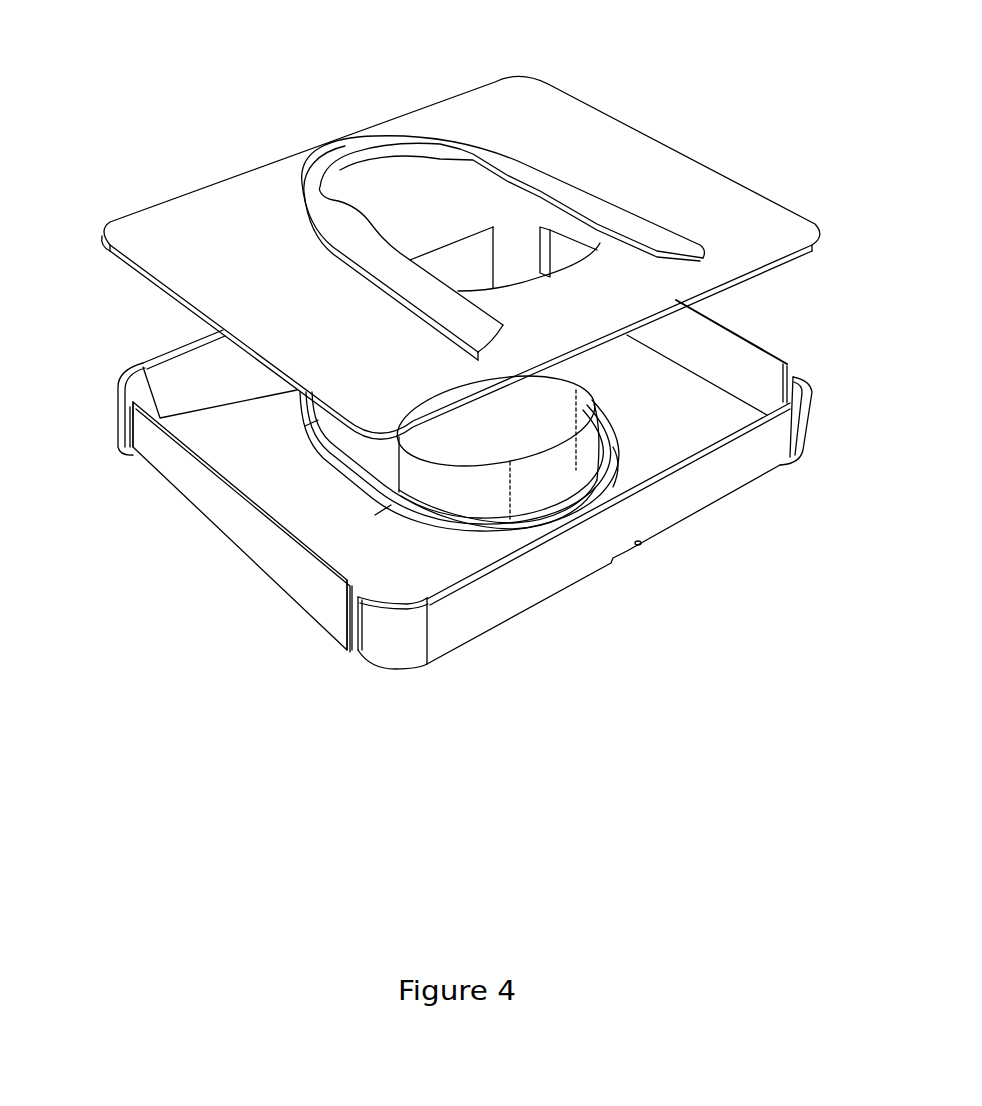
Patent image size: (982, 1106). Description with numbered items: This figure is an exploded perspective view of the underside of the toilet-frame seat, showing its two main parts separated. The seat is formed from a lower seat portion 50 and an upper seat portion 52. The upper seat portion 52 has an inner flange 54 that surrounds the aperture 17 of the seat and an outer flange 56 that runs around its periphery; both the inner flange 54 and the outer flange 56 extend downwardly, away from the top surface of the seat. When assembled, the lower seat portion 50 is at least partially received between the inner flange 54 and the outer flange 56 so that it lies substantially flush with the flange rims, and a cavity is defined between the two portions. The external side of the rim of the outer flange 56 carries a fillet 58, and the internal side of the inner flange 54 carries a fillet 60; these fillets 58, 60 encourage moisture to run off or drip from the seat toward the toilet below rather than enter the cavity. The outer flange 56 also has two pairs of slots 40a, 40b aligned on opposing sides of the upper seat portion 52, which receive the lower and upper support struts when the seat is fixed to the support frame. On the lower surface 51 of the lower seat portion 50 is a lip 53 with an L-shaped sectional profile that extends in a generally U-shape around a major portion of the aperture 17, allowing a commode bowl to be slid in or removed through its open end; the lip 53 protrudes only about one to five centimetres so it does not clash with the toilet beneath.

The aperture 17 is at (527, 294).
The slots 40a is at (129, 430).
The slots 40b is at (540, 246).
The lower seat portion 50 is at (623, 182).
The lower surface 51 is at (559, 104).
The upper seat portion 52 is at (600, 542).
The lip 53 is at (303, 180).
The inner flange 54 is at (357, 440).
The outer flange 56 is at (291, 569).
The fillet 58 is at (749, 431).
The fillet 60 is at (592, 395).